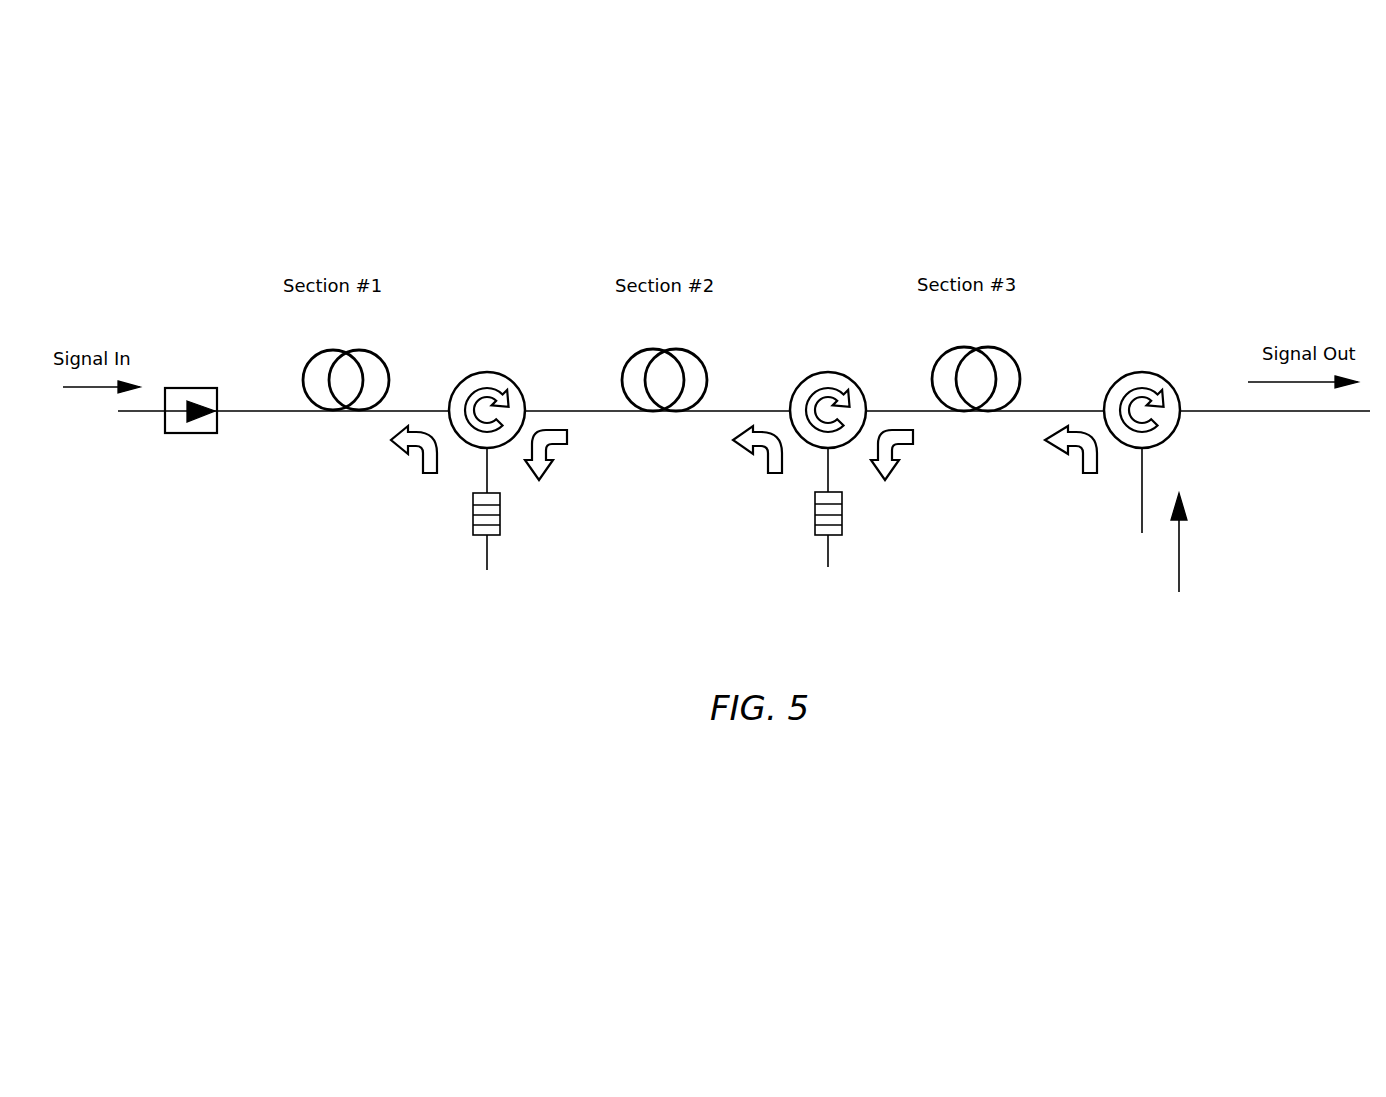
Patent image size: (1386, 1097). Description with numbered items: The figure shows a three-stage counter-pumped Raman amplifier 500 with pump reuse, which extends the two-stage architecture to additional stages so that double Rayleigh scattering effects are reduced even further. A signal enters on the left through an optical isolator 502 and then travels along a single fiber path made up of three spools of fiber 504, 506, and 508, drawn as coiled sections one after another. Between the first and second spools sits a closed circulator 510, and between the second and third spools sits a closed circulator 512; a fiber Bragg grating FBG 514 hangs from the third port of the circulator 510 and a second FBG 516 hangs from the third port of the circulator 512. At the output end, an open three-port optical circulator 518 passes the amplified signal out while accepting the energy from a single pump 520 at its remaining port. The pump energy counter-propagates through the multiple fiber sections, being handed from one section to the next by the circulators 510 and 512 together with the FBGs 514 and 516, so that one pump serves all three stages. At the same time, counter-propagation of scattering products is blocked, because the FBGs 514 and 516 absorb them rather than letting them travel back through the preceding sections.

The three-stage counter-pumped Raman amplifier 500 is at (588, 250).
The optical isolator 502 is at (200, 383).
The spool of fiber 504 is at (312, 409).
The spool of fiber 506 is at (697, 357).
The spool of fiber 508 is at (1007, 352).
The closed circulator 510 is at (510, 382).
The closed circulator 512 is at (848, 378).
The FBG 514 is at (473, 520).
The FBG 516 is at (815, 518).
The open three-port optical circulator 518 is at (1163, 377).
The pump 520 is at (1179, 550).